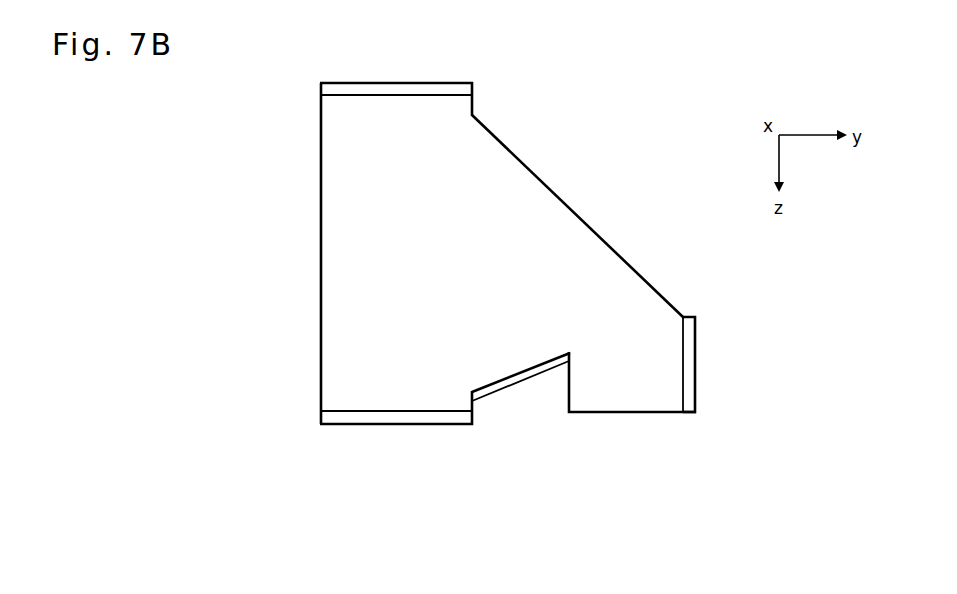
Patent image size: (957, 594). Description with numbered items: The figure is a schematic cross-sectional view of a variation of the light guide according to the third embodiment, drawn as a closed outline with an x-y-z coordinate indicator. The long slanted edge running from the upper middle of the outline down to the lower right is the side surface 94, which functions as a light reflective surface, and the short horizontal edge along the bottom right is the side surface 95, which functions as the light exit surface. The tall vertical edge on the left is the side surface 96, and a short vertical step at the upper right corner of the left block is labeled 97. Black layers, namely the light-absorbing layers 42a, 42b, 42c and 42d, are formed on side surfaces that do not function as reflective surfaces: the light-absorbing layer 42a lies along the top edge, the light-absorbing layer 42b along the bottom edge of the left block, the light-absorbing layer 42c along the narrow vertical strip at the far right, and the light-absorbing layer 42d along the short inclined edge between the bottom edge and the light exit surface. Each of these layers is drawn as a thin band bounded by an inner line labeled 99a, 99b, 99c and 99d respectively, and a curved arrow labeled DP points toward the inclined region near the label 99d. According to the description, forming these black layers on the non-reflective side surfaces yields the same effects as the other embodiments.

The light-absorbing layer 42a is at (336, 90).
The first layer 99a is at (444, 94).
The corner portion 97 is at (475, 100).
The side surface 94 is at (593, 228).
The side surface 96 is at (321, 213).
The third layer 99c is at (688, 333).
The light-absorbing layer 42c is at (690, 393).
The side surface 95 is at (642, 392).
The second layer 99b is at (353, 418).
The light-absorbing layer 42b is at (413, 425).
The light-absorbing layer 42d is at (488, 388).
The fourth layer 99d is at (519, 381).
The detection portion DP is at (534, 463).